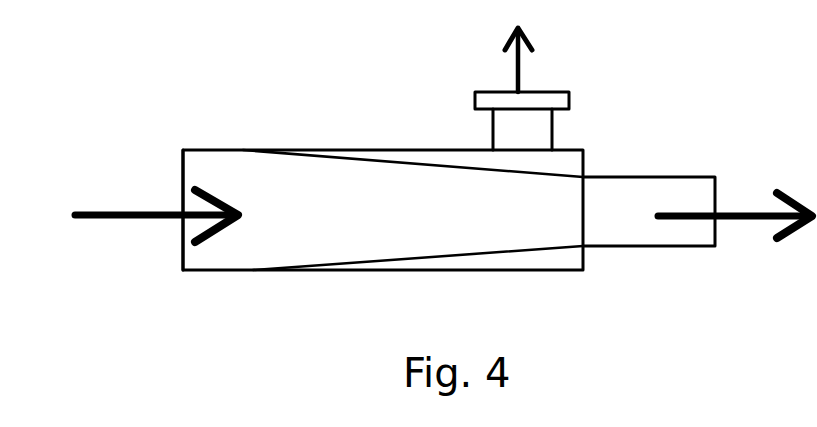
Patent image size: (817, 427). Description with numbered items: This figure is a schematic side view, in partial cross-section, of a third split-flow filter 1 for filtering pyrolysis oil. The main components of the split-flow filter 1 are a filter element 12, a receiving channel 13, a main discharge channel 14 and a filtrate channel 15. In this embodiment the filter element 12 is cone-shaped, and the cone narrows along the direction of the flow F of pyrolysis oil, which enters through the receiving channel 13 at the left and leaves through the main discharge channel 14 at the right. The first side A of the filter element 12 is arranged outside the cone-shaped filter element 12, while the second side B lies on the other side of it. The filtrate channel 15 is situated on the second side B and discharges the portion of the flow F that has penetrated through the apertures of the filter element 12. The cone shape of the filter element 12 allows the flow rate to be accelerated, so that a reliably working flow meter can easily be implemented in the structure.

The split-flow filter 1 is at (443, 201).
The filter element 12 is at (403, 162).
The receiving channel 13 is at (194, 172).
The main discharge channel 14 is at (693, 190).
The filtrate channel 15 is at (542, 128).
The flow of pyrolysis oil F is at (443, 194).
The first side of the filter element A is at (340, 232).
The second side of the filter element B is at (545, 260).